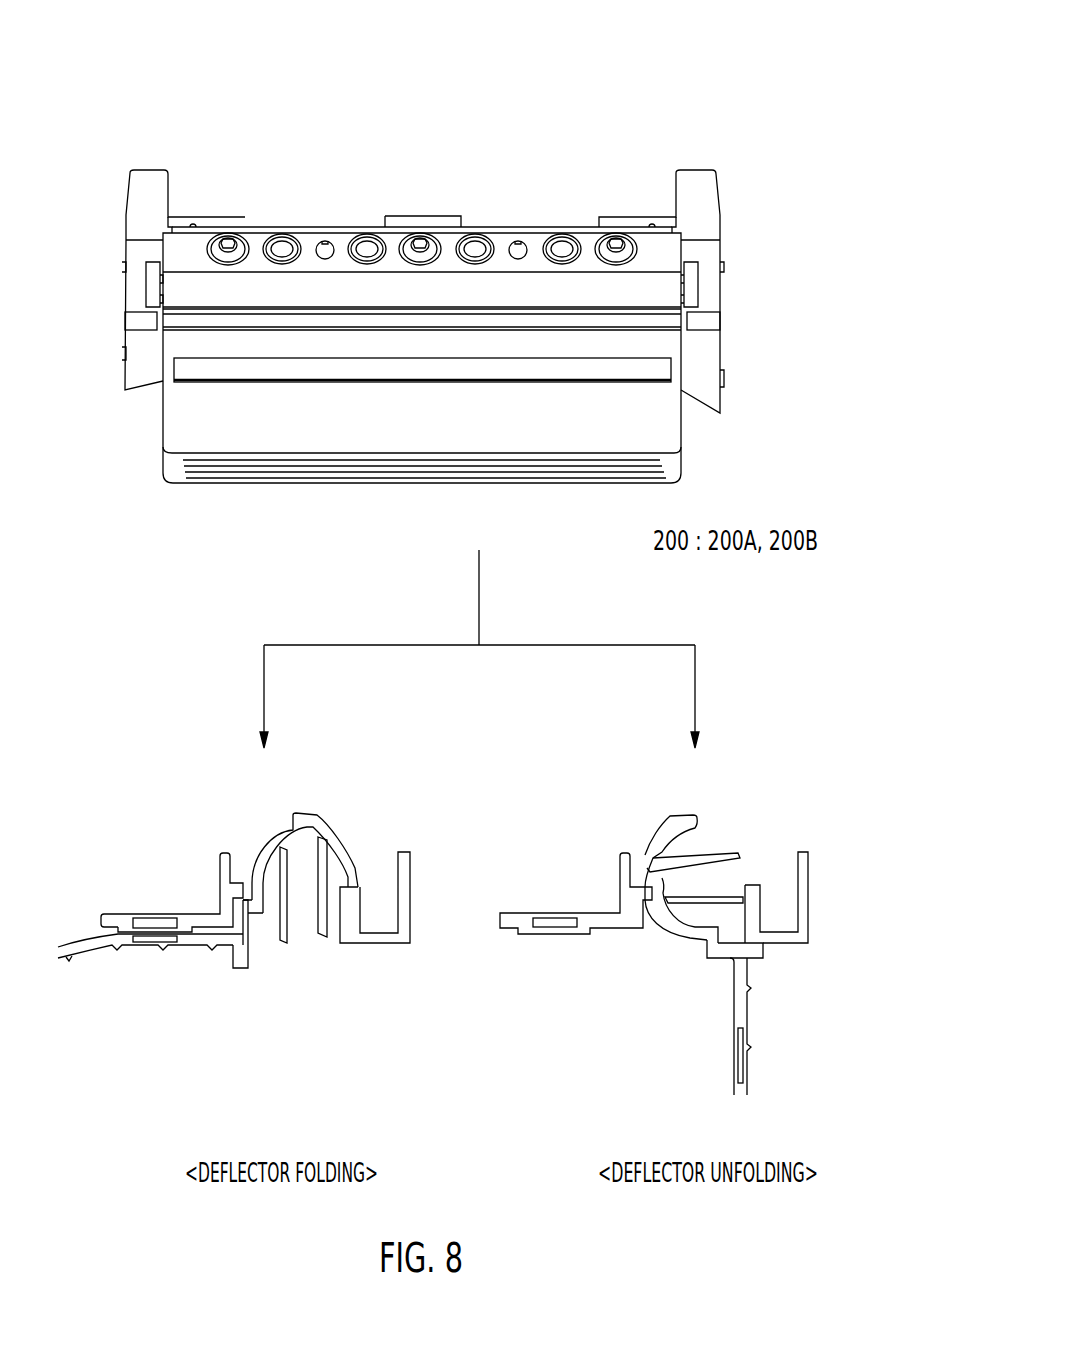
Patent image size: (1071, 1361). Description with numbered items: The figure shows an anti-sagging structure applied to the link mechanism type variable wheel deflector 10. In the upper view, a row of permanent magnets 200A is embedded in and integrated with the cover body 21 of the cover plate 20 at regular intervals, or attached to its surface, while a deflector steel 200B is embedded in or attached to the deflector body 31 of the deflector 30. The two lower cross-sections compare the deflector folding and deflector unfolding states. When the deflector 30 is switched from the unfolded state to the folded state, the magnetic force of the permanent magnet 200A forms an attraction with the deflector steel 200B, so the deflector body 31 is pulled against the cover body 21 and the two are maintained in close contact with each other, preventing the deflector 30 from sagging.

The link mechanism type variable wheel deflector 10 is at (704, 117).
The cover plate 20 is at (132, 337).
The cover body 21 is at (257, 240).
The deflector 30 is at (176, 435).
The deflector body 31 is at (95, 950).
The permanent magnet 200A is at (518, 238).
The deflector steel 200B is at (652, 378).